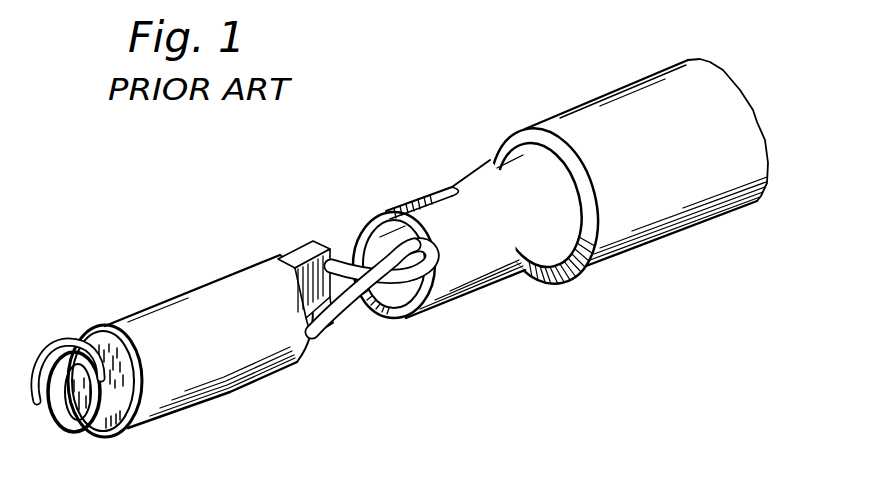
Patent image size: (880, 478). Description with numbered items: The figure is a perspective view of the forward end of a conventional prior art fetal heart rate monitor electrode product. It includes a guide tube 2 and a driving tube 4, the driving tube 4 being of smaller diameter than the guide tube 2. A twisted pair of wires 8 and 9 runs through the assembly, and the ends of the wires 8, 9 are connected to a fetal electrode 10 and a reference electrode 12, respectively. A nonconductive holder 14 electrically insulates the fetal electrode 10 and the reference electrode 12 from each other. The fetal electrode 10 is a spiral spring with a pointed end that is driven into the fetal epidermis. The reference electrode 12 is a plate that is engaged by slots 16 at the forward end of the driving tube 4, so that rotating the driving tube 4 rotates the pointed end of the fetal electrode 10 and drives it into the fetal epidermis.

The guide tube 2 is at (666, 215).
The driving tube 4 is at (500, 266).
The wire 8 is at (352, 318).
The wire 9 is at (392, 305).
The fetal electrode 10 is at (52, 346).
The reference electrode 12 is at (312, 245).
The nonconductive holder 14 is at (225, 358).
The slots 16 is at (435, 188).